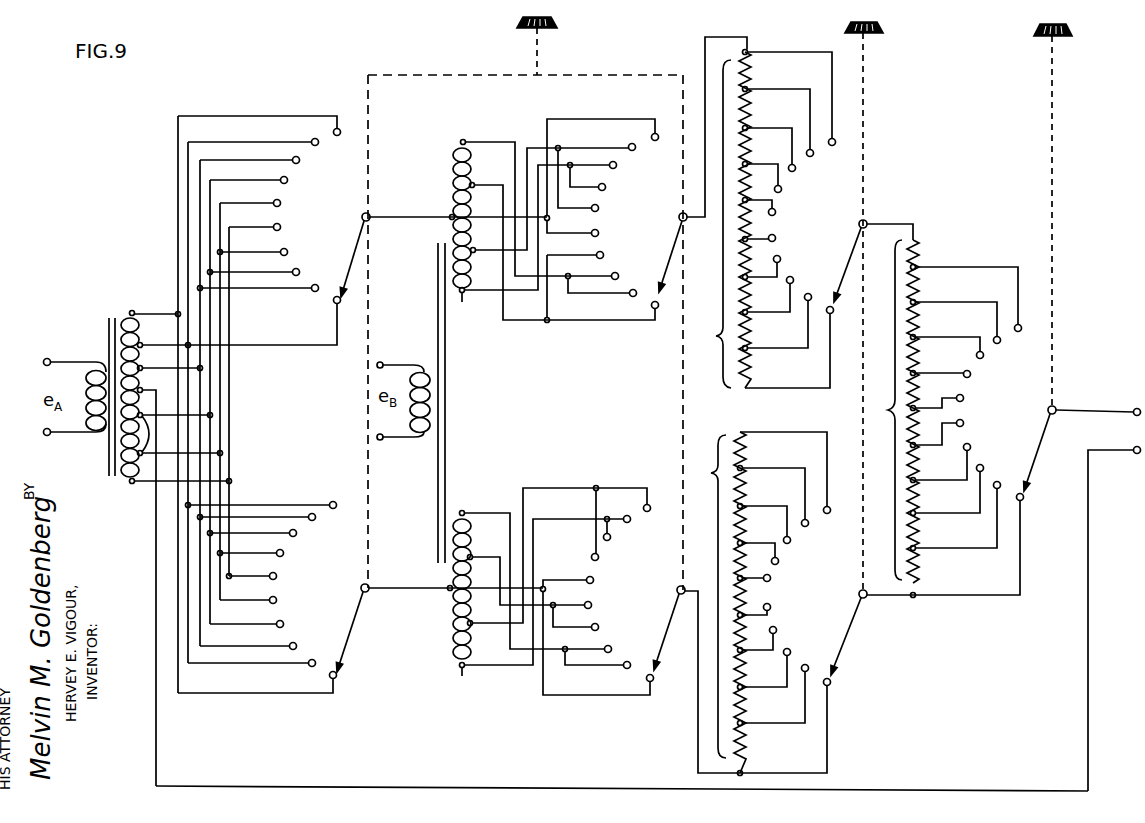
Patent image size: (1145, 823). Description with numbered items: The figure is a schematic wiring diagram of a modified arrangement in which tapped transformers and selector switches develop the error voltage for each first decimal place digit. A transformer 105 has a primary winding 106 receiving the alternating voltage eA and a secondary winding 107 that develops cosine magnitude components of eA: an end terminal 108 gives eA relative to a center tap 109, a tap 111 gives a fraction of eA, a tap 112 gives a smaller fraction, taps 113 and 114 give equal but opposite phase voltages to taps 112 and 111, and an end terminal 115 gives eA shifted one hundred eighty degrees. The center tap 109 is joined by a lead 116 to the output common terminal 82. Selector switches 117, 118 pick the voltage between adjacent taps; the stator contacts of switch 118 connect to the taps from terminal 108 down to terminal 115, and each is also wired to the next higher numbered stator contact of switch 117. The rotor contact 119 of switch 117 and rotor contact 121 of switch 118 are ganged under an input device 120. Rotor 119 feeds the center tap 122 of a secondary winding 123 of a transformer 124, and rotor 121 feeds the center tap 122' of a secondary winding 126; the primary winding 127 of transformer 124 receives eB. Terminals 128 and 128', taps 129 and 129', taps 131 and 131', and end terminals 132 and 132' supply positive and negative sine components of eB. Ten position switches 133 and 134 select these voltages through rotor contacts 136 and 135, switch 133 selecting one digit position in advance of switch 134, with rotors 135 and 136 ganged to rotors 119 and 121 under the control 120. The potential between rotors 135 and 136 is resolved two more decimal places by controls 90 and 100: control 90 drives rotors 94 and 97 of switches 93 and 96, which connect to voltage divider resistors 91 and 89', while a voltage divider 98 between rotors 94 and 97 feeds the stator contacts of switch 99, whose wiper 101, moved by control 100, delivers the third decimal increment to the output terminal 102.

The output common terminal 82 is at (1135, 458).
The voltage divider resistor 89' is at (758, 212).
The control 90 is at (848, 27).
The voltage divider resistor 91 is at (711, 473).
The switch 93 is at (814, 578).
The rotor 94 is at (840, 639).
The switch 96 is at (815, 217).
The rotor 97 is at (843, 268).
The voltage divider 98 is at (888, 410).
The switch 99 is at (1011, 386).
The control 100 is at (1035, 30).
The wiper 101 is at (1029, 465).
The output terminal 102 is at (1135, 408).
The transformer 105 is at (108, 336).
The primary winding 106 is at (90, 388).
The secondary winding 107 is at (128, 312).
The end terminal 108 is at (132, 310).
The center tap 109 is at (143, 390).
The tap 111 is at (142, 343).
The tap 112 is at (142, 367).
The tap 113 is at (134, 485).
The tap 114 is at (128, 481).
The end terminal 115 is at (131, 492).
The lead 116 is at (413, 787).
The selector switch 117 is at (338, 181).
The selector switch 118 is at (337, 547).
The rotor contact 119 is at (347, 256).
The input device 120 is at (517, 22).
The rotor contact 121 is at (346, 632).
The center tap 122 is at (512, 176).
The center tap 122' is at (509, 637).
The secondary winding 123 is at (453, 168).
The transformer 124 is at (447, 370).
The secondary winding 126 is at (452, 640).
The primary winding 127 is at (428, 360).
The terminal 128 is at (519, 210).
The terminal 128' is at (538, 573).
The tap 129 is at (563, 239).
The tap 129' is at (530, 574).
The tap 131 is at (550, 199).
The tap 131' is at (558, 570).
The end terminal 132 is at (531, 242).
The end terminal 132' is at (538, 610).
The switch 133 is at (636, 217).
The switch 134 is at (630, 587).
The rotor contact 135 is at (661, 641).
The rotor contact 136 is at (665, 268).